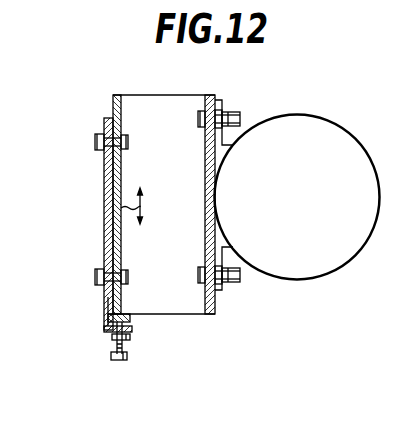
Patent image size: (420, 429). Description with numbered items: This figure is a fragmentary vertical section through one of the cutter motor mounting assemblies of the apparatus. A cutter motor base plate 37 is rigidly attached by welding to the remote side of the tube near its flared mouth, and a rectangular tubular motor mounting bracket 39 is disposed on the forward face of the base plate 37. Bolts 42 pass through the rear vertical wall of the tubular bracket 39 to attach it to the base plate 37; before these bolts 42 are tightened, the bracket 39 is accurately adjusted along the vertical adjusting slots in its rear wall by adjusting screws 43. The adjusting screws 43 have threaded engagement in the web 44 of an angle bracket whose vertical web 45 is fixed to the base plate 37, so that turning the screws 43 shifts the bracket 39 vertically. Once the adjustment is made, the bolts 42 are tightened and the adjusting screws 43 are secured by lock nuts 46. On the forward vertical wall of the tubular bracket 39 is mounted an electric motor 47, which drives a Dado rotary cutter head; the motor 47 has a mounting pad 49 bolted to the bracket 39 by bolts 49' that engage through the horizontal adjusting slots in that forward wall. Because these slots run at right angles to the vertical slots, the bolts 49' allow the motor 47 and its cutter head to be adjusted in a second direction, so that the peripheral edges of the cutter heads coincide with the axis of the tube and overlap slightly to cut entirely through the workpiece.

The cutter motor base plate 37 is at (105, 222).
The tubular motor mounting bracket 39 is at (213, 314).
The bolt 42 is at (93, 138).
The adjusting screw 43 is at (122, 362).
The web of angle bracket 44 is at (128, 337).
The vertical web of angle bracket 45 is at (100, 316).
The lock nut 46 is at (106, 338).
The electric motor 47 is at (303, 274).
The mounting pad 49 is at (248, 195).
The bolt 49' is at (241, 195).